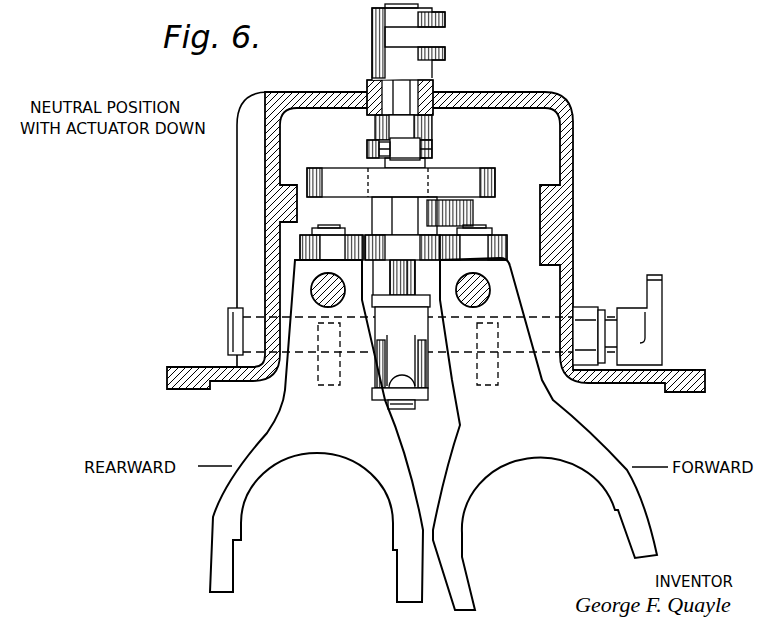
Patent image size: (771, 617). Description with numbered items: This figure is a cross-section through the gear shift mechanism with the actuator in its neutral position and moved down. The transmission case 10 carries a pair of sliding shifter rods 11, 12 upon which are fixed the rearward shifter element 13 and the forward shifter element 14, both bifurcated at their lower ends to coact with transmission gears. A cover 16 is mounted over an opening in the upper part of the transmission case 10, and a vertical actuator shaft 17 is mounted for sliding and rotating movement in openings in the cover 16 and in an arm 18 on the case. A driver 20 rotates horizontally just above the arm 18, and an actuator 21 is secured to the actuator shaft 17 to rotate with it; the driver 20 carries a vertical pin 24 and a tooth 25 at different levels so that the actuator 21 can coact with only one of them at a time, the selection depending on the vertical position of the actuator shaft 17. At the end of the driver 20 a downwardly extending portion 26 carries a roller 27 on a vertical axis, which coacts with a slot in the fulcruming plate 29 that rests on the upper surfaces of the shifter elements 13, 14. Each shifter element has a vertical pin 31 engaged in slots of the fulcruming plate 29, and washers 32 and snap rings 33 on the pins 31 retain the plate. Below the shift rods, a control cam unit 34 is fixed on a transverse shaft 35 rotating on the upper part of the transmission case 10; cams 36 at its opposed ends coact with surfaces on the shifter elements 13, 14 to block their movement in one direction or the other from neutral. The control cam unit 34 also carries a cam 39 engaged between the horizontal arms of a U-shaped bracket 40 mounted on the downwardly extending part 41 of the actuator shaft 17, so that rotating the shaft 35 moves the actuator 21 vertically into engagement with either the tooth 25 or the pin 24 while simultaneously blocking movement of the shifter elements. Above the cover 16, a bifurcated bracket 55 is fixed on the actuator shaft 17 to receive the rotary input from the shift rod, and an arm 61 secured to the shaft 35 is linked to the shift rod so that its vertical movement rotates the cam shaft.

The transmission case 10 is at (575, 237).
The sliding shifter rod 11 is at (312, 290).
The sliding shifter rod 12 is at (490, 290).
The rearward shifter element 13 is at (278, 406).
The forward shifter element 14 is at (580, 412).
The cover 16 is at (512, 90).
The actuator shaft 17 is at (392, 100).
The arm 18 is at (462, 220).
The driver 20 is at (483, 178).
The actuator 21 is at (432, 150).
The vertical pin 24 is at (390, 150).
The tooth 25 is at (432, 128).
The downwardly extending portion 26 is at (382, 210).
The roller 27 is at (383, 250).
The fulcruming plate 29 is at (300, 250).
The vertical pin 31 is at (320, 228).
The washer 32 is at (497, 245).
The snap ring 33 is at (490, 238).
The control cam unit 34 is at (352, 382).
The shaft 35 is at (228, 332).
The cam 36 is at (318, 385).
The cam 39 is at (428, 388).
The U-shaped bracket 40 is at (382, 300).
The downwardly extending part 41 is at (400, 408).
The bifurcated bracket 55 is at (446, 17).
The arm 61 is at (655, 292).